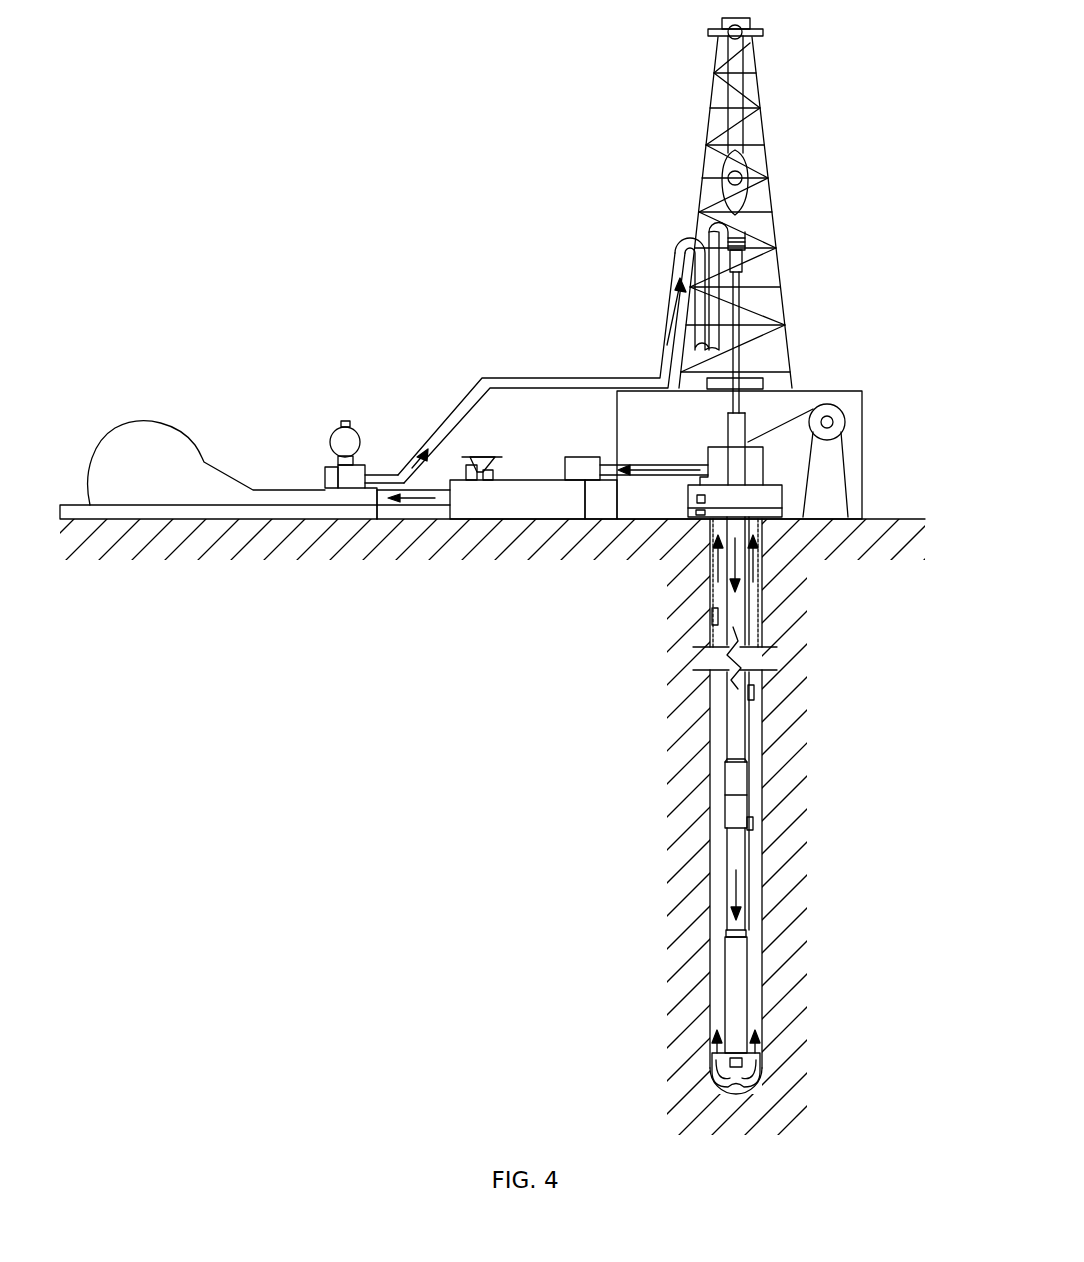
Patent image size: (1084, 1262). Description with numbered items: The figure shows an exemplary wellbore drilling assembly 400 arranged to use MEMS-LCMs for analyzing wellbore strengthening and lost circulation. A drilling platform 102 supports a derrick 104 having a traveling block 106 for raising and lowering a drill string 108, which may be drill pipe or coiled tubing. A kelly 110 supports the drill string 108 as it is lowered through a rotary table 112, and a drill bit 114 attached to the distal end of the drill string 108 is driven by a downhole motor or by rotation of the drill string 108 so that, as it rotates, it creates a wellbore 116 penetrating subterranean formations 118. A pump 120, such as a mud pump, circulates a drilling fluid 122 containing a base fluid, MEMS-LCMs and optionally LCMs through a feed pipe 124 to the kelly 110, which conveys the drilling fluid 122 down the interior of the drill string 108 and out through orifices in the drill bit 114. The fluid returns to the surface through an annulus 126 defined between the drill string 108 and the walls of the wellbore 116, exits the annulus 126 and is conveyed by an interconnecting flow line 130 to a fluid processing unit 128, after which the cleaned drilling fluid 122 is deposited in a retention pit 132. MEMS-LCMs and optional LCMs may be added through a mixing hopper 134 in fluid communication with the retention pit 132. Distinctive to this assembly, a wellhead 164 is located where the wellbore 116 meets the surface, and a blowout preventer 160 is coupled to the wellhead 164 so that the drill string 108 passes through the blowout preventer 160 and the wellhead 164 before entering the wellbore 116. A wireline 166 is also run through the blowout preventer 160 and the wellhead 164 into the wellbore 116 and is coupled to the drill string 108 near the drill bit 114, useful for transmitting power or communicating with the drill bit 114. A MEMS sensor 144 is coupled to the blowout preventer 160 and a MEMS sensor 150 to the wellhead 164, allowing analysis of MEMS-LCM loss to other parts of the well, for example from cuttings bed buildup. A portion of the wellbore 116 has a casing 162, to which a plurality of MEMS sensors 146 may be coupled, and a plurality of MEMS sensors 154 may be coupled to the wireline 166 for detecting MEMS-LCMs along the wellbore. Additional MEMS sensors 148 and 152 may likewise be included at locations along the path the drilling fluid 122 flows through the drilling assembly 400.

The wellbore drilling assembly 400 is at (448, 100).
The drilling platform 102 is at (862, 395).
The derrick 104 is at (770, 118).
The traveling block 106 is at (750, 163).
The drill string 108 is at (733, 627).
The kelly 110 is at (737, 302).
The rotary table 112 is at (766, 386).
The drill bit 114 is at (761, 1060).
The wellbore 116 is at (768, 735).
The subterranean formations 118 is at (561, 757).
The pump 120 is at (123, 483).
The drilling fluid 122 is at (392, 478).
The feed pipe 124 is at (484, 378).
The annulus 126 is at (755, 886).
The fluid processing unit 128 is at (584, 457).
The interconnecting flow line 130 is at (621, 522).
The retention pit 132 is at (496, 513).
The mixing hopper 134 is at (478, 478).
The MEMS sensor 144 is at (690, 498).
The MEMS sensors 146 is at (712, 615).
The MEMS sensor 148 is at (325, 478).
The MEMS sensor 150 is at (696, 516).
The MEMS sensor 152 is at (757, 692).
The MEMS sensors 154 is at (754, 824).
The blowout preventer 160 is at (700, 467).
The casing 162 is at (708, 640).
The wellhead 164 is at (782, 514).
The wireline 166 is at (803, 425).